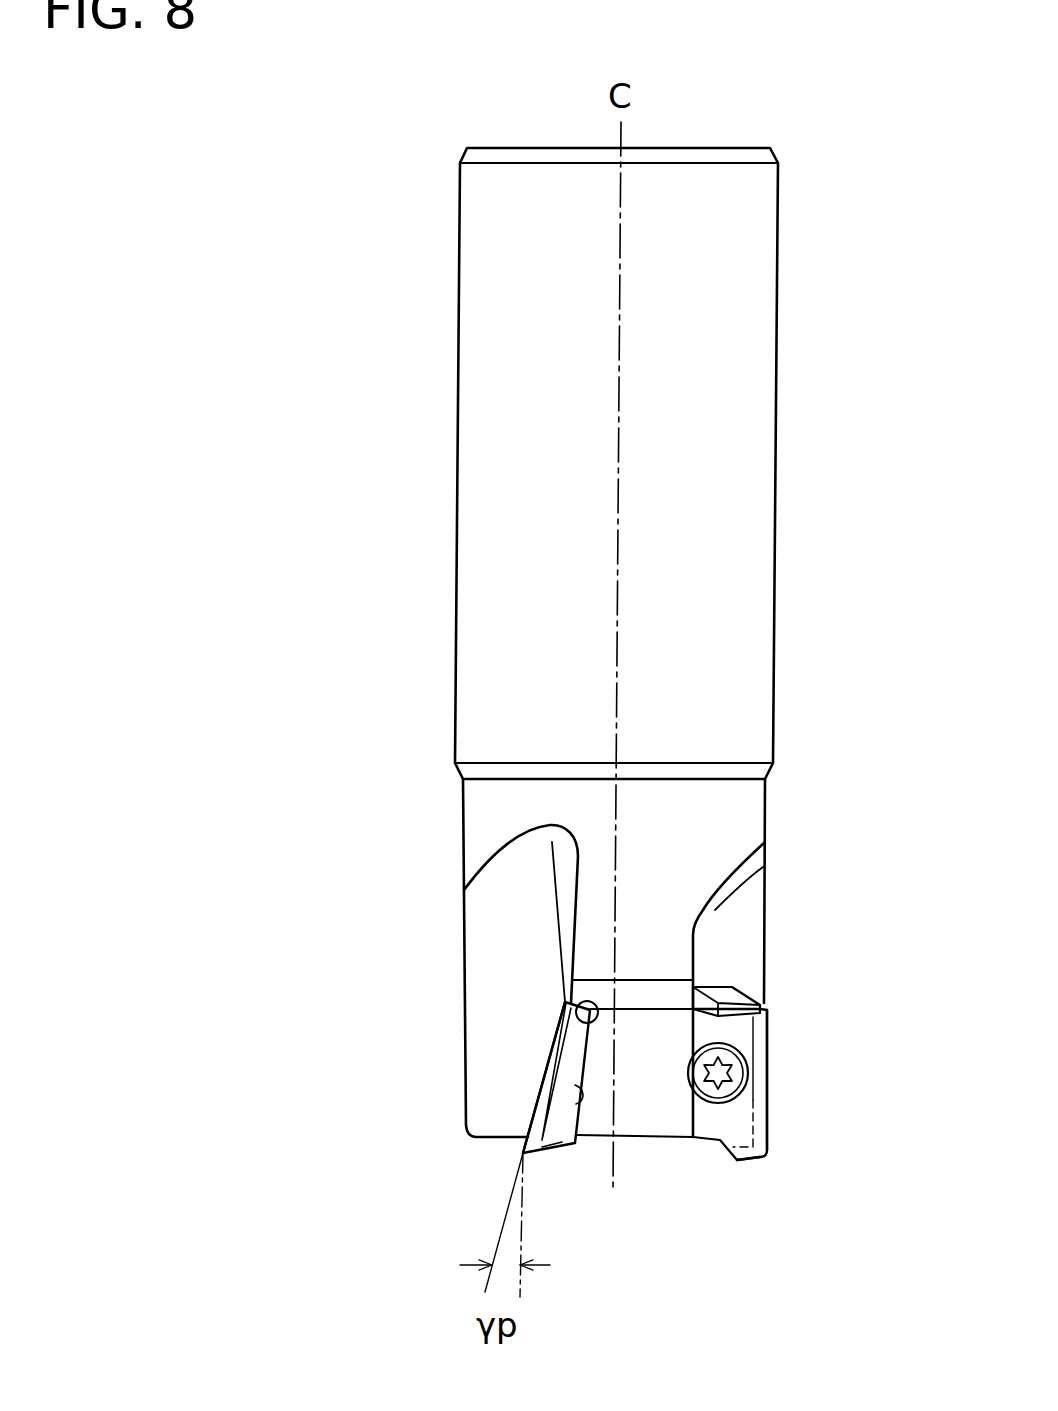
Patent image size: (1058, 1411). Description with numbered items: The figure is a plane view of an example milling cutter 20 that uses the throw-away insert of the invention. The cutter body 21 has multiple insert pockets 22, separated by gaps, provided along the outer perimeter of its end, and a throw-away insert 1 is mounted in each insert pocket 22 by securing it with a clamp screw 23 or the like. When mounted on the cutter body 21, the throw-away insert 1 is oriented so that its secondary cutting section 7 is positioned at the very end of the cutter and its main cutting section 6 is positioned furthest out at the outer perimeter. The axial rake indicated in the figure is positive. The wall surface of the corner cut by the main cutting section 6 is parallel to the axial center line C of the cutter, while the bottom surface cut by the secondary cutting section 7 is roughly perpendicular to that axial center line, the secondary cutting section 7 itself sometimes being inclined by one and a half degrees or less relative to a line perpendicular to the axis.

The milling cutter 20 is at (797, 430).
The cutter body 21 is at (740, 645).
The throw-away insert 1 is at (768, 1058).
The main cutting section 6 is at (540, 1078).
The secondary cutting section 7 is at (750, 1163).
The insert pocket 22 is at (582, 1100).
The clamp screw 23 is at (730, 1047).